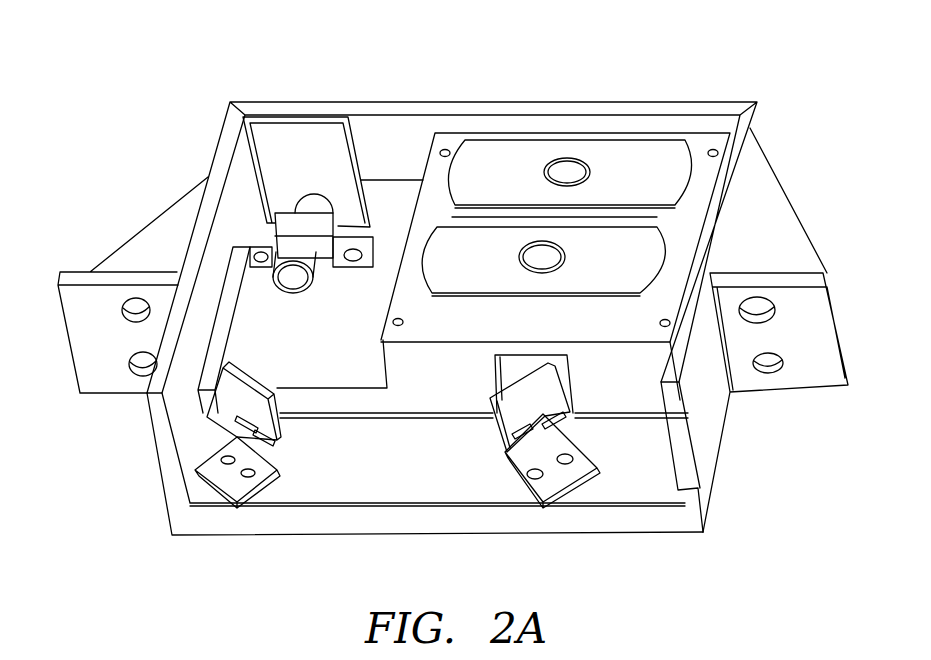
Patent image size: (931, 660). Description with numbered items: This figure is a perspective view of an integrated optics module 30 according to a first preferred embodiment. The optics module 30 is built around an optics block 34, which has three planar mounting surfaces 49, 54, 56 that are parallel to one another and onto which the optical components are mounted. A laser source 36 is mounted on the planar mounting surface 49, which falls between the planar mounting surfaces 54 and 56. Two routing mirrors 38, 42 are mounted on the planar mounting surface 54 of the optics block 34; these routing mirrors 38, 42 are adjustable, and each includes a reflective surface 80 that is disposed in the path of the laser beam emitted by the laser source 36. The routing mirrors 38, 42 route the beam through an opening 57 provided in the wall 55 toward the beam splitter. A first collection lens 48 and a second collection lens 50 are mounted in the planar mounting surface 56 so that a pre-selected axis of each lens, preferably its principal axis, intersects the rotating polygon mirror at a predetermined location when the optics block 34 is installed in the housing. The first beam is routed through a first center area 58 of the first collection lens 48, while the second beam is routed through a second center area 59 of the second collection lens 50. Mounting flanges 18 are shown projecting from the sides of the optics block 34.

The optics module 30 is at (625, 52).
The optics block 34 is at (493, 108).
The laser source 36 is at (311, 202).
The routing mirror 38 is at (260, 488).
The routing mirror 42 is at (507, 472).
The first collection lens 48 is at (633, 250).
The planar mounting surface 49 is at (310, 344).
The second collection lens 50 is at (652, 153).
The planar mounting surface 54 is at (416, 474).
The wall 55 is at (613, 388).
The planar mounting surface 56 is at (700, 182).
The opening 57 is at (495, 372).
The first center area 58 is at (518, 258).
The second center area 59 is at (562, 158).
The reflective surface 80 is at (281, 428).
The mounting flange 18 is at (115, 382).